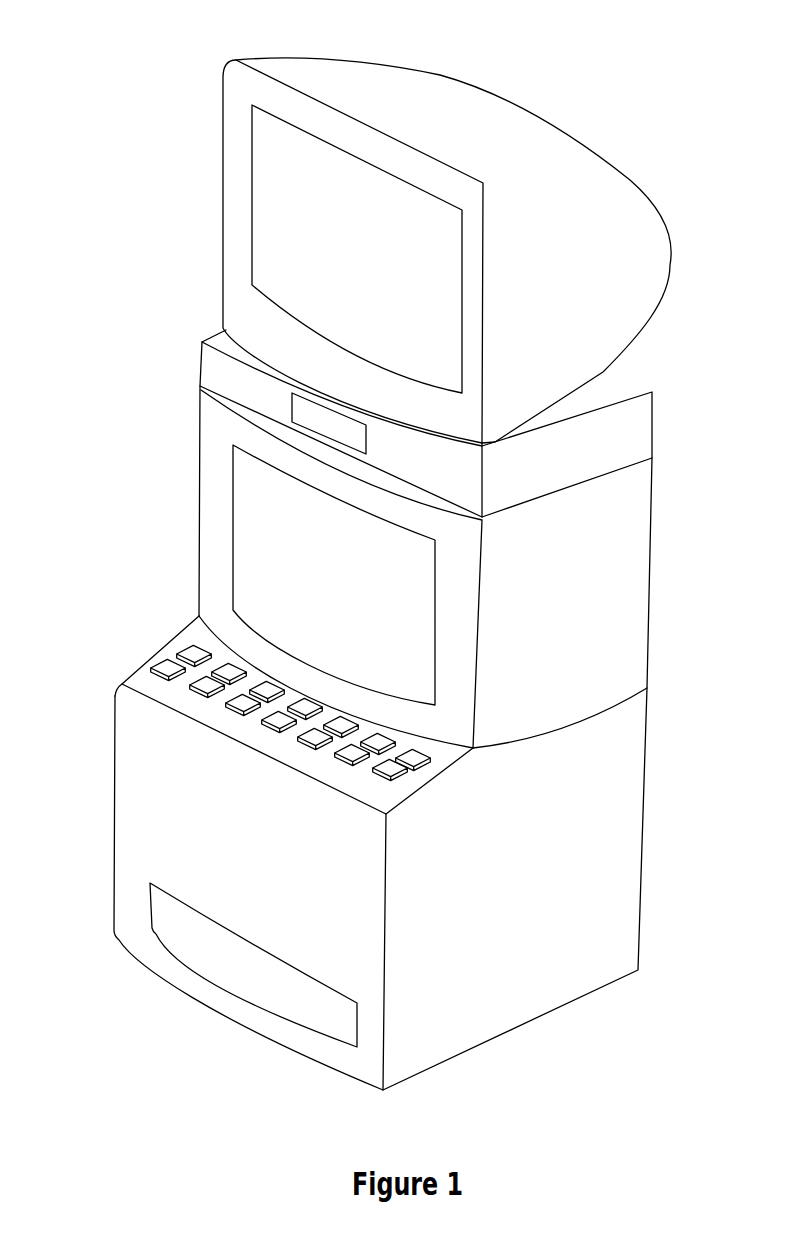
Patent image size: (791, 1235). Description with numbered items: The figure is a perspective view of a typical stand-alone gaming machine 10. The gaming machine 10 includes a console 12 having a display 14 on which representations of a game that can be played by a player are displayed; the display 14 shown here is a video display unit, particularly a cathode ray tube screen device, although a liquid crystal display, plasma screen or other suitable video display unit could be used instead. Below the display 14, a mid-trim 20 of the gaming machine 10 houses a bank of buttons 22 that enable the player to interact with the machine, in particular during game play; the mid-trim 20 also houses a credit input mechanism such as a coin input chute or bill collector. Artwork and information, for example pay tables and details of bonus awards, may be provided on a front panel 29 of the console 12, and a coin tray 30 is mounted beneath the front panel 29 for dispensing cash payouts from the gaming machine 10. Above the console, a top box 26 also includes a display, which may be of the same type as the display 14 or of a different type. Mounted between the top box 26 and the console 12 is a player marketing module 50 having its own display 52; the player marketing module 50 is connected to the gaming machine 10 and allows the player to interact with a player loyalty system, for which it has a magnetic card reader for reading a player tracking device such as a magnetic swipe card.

The gaming machine 10 is at (612, 91).
The console 12 is at (570, 586).
The display 14 is at (252, 505).
The mid-trim 20 is at (150, 646).
The bank of buttons 22 is at (210, 707).
The top box 26 is at (219, 166).
The front panel 29 is at (140, 852).
The coin tray 30 is at (238, 960).
The player marketing module 50 is at (660, 421).
The display 52 is at (308, 410).